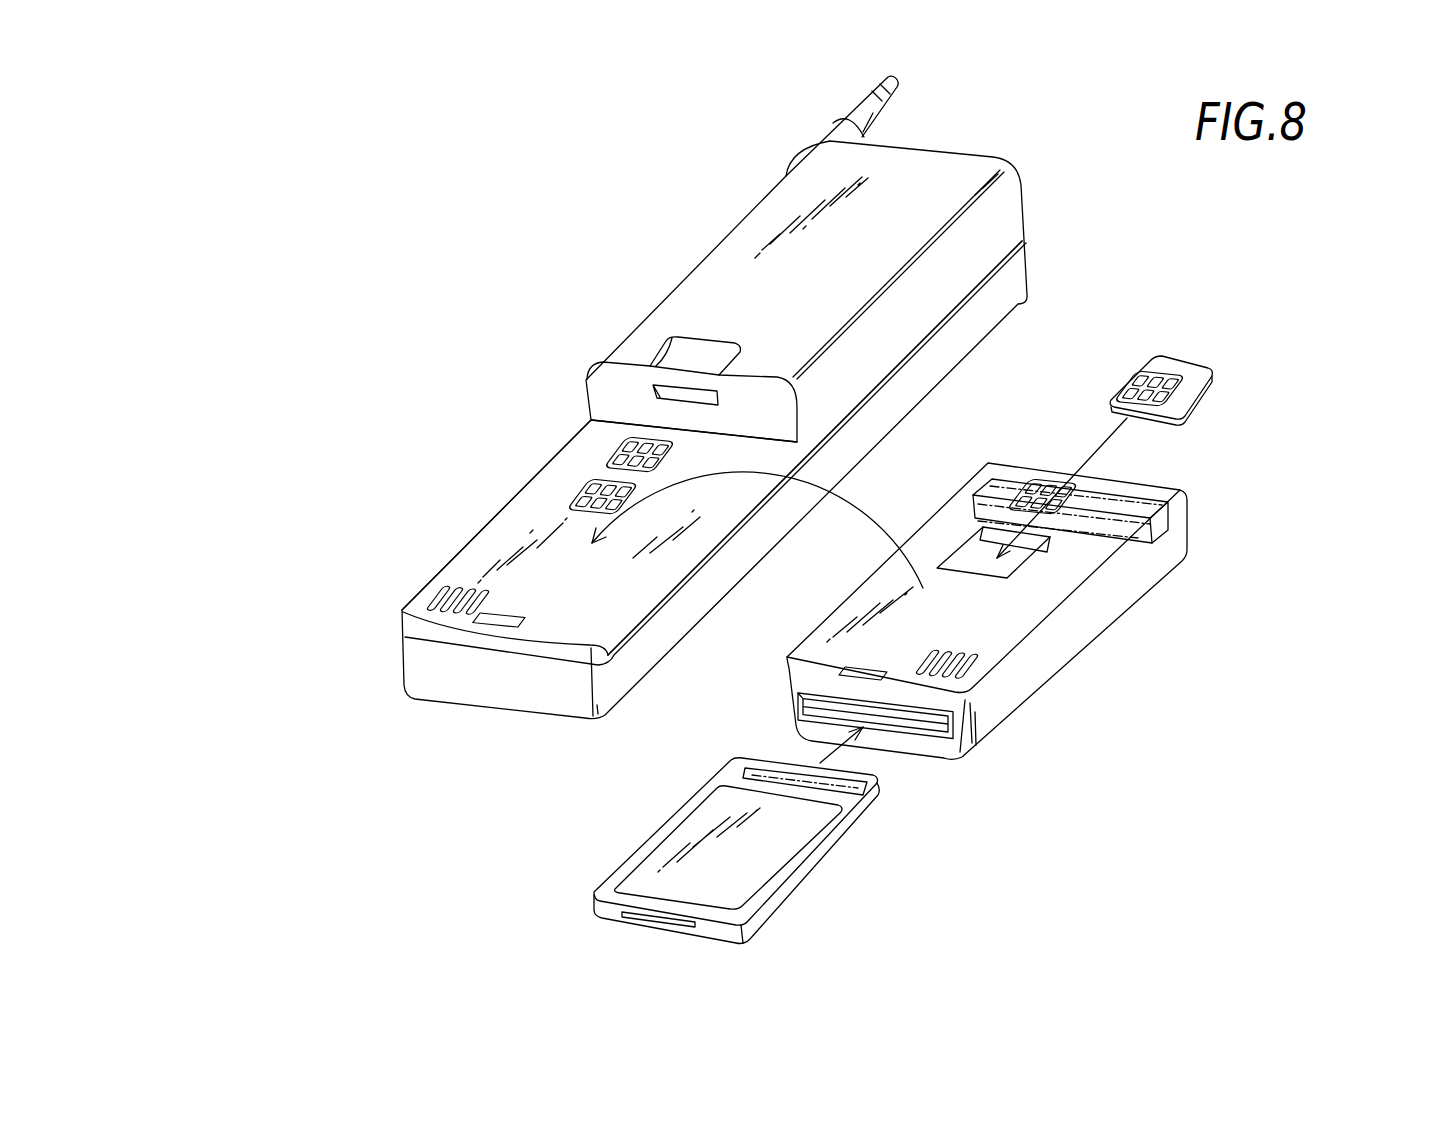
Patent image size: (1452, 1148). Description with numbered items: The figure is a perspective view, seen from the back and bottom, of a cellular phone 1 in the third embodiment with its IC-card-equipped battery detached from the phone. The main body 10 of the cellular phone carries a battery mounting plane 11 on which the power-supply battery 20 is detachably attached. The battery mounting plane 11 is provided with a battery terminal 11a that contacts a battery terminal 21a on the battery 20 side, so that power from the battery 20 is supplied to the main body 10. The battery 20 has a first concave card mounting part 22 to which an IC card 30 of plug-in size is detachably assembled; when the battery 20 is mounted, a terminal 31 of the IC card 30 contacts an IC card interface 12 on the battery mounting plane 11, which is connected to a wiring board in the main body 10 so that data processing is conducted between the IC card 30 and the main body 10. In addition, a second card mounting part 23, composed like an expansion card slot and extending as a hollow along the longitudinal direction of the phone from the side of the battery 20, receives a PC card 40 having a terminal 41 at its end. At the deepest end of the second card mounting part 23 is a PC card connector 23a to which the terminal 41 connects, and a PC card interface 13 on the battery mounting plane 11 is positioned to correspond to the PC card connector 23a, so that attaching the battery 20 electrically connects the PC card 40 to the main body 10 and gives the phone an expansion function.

The cellular phone 1 is at (580, 768).
The main body 10 is at (407, 700).
The battery mounting plane 11 is at (497, 537).
The battery terminal 11a is at (437, 598).
The IC card interface 12 is at (570, 497).
The PC card interface 13 is at (623, 450).
The battery 20 is at (765, 699).
The battery terminal 21a is at (977, 664).
The first card mounting part 22 is at (1013, 557).
The second card mounting part 23 is at (950, 752).
The PC card connector 23a is at (1073, 489).
The IC card 30 is at (1181, 366).
The terminal 31 is at (1132, 387).
The PC card 40 is at (793, 883).
The terminal 41 is at (858, 795).